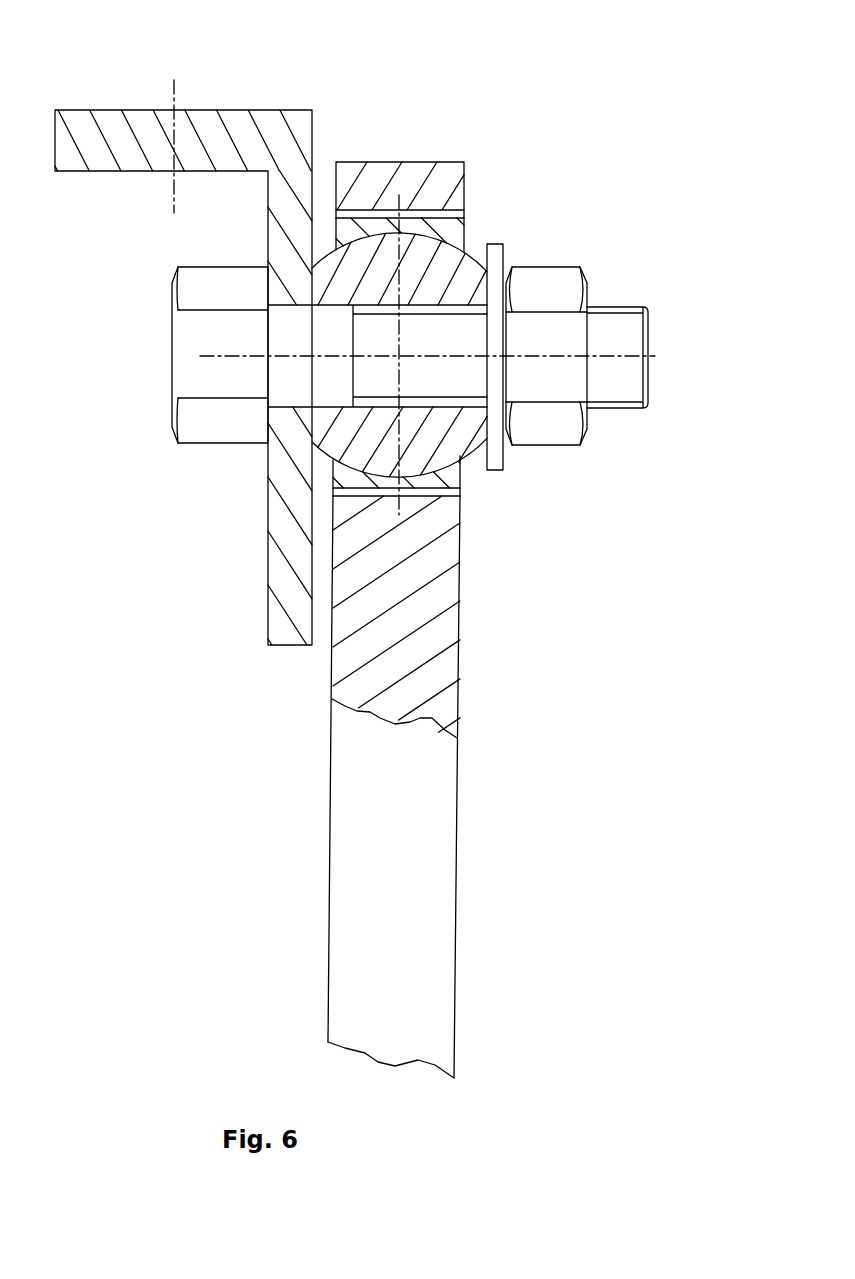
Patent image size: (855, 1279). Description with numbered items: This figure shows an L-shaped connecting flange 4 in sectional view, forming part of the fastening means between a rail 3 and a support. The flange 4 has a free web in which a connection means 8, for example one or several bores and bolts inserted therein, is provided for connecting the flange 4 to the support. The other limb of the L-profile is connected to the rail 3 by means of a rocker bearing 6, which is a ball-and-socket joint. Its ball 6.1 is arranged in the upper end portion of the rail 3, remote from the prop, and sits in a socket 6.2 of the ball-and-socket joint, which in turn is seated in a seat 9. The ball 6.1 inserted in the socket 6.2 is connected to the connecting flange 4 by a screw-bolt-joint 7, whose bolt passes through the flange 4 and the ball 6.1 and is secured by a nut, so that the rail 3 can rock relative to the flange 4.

The rail 3 is at (432, 810).
The connecting flange 4 is at (265, 118).
The rocker bearing 6 is at (472, 248).
The ball 6.1 is at (330, 428).
The socket 6.2 is at (448, 483).
The screw-bolt-joint 7 is at (200, 365).
The connection means 8 is at (174, 90).
The seat 9 is at (449, 213).